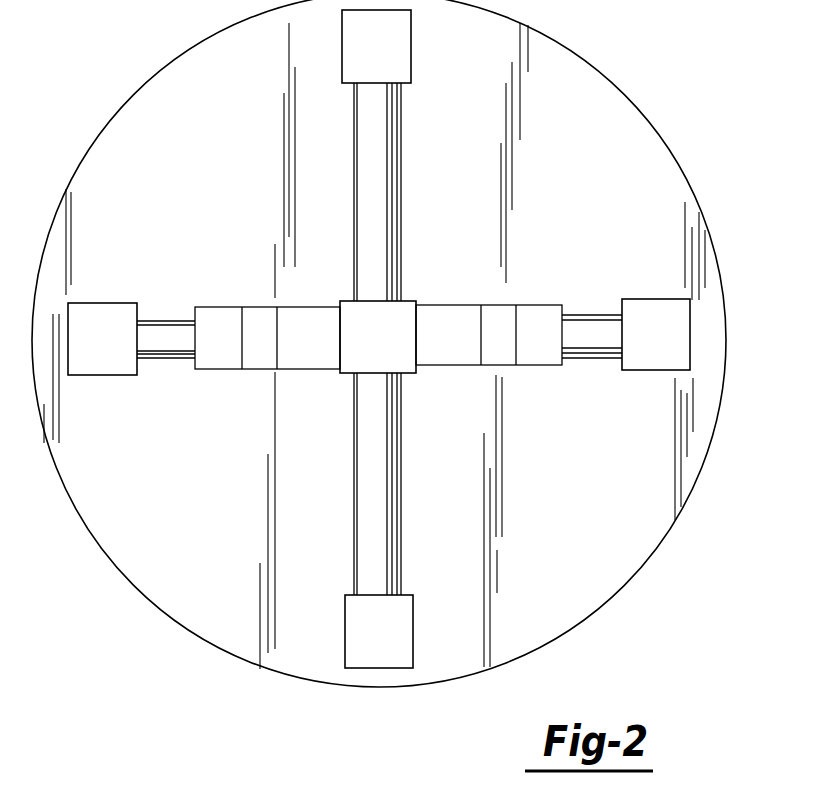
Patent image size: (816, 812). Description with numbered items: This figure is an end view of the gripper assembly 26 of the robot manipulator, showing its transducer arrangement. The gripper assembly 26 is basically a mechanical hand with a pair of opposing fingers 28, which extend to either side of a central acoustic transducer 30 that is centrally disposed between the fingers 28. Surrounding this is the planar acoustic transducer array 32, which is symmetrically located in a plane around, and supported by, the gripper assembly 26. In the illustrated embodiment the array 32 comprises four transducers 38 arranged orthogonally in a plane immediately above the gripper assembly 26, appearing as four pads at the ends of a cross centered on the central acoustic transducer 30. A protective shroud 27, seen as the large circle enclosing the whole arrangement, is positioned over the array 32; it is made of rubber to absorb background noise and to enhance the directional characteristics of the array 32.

The gripper assembly 26 is at (427, 255).
The protective shroud 27 is at (595, 65).
The opposing fingers 28 is at (290, 307).
The central acoustic transducer 30 is at (384, 351).
The planar acoustic transducer array 32 is at (424, 561).
The transducers 38 is at (411, 55).